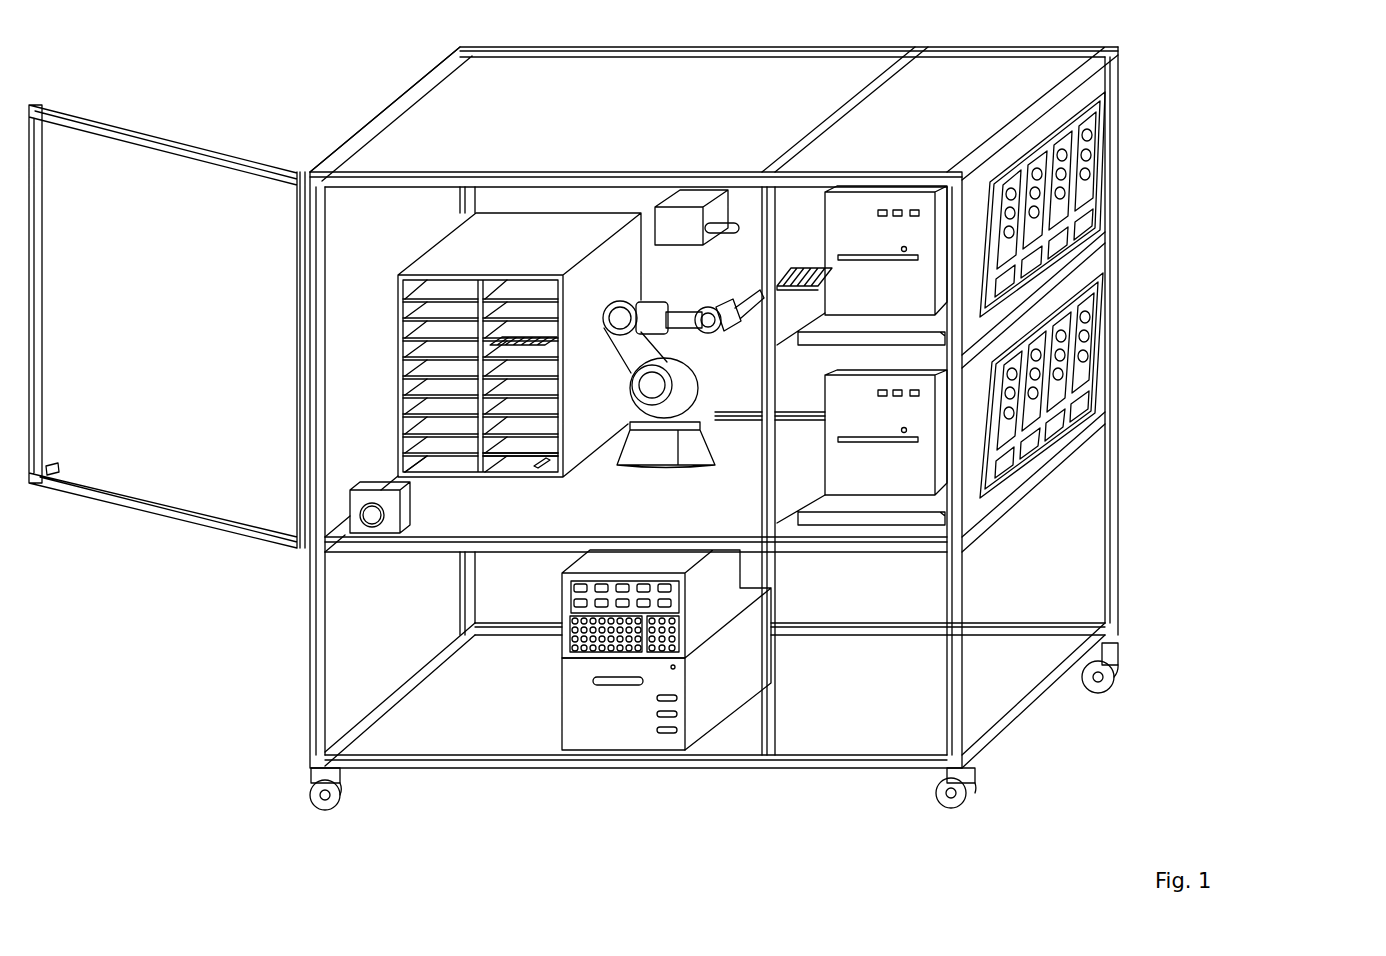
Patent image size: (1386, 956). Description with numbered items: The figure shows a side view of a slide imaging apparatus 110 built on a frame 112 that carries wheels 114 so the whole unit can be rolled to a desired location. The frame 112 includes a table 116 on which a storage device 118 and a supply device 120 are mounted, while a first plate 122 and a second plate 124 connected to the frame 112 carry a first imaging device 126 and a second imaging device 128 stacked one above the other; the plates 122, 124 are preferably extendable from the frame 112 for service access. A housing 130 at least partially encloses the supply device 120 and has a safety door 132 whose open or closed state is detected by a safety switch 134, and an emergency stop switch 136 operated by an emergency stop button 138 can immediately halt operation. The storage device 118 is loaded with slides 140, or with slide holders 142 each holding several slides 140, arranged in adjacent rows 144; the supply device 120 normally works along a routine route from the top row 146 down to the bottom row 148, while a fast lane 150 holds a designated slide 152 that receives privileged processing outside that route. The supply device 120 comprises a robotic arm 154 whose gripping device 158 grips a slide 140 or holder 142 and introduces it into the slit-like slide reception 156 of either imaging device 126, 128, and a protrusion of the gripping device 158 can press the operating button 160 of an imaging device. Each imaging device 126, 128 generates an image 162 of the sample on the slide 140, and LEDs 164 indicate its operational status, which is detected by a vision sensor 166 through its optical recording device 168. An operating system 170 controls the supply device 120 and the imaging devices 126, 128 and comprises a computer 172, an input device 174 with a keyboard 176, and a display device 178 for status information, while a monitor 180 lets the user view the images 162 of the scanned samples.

The slide imaging apparatus 110 is at (1283, 140).
The frame 112 is at (1128, 462).
The wheels 114 is at (326, 801).
The table 116 is at (446, 550).
The storage device 118 is at (575, 204).
The supply device 120 is at (670, 455).
The first plate 122 is at (862, 527).
The second plate 124 is at (810, 341).
The first imaging device 126 is at (814, 482).
The second imaging device 128 is at (879, 188).
The housing 130 is at (383, 108).
The safety door 132 is at (156, 170).
The safety switch 134 is at (50, 478).
The emergency stop switch 136 is at (345, 492).
The emergency stop button 138 is at (372, 530).
The slides 140 is at (546, 338).
The slide holders 142 is at (548, 353).
The rows 144 is at (458, 276).
The top row 146 is at (405, 292).
The bottom row 148 is at (396, 464).
The fast lane 150 is at (506, 478).
The designated slide 152 is at (545, 483).
The robotic arm 154 is at (660, 344).
The slide reception 156 is at (882, 262).
The gripping device 158 is at (760, 287).
The operating button 160 is at (902, 247).
The image 162 is at (1086, 208).
The LEDs 164 is at (915, 210).
The vision sensor 166 is at (695, 237).
The optical recording device 168 is at (740, 218).
The operating system 170 is at (609, 762).
The computer 172 is at (638, 723).
The input device 174 is at (733, 608).
The keyboard 176 is at (574, 645).
The display device 178 is at (572, 590).
The monitor 180 is at (1114, 159).